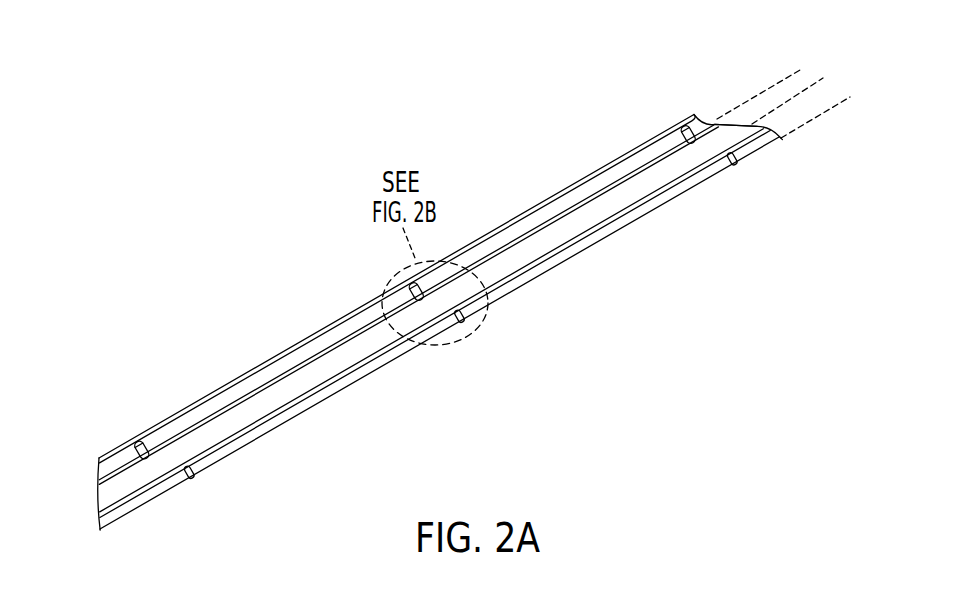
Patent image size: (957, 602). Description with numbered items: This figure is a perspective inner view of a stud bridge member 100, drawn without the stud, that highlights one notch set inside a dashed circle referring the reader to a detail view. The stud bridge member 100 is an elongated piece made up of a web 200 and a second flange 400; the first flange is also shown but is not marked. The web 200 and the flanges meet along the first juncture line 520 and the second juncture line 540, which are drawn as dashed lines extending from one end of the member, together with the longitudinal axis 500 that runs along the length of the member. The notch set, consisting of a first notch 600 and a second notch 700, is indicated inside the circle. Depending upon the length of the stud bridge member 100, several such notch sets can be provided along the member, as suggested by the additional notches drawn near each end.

The stud bridge member 100 is at (557, 124).
The web 200 is at (109, 494).
The second flange 400 is at (755, 146).
The longitudinal axis 500 is at (785, 101).
The first juncture line 520 is at (777, 82).
The second juncture line 540 is at (837, 105).
The first notch 600 is at (395, 280).
The second notch 700 is at (459, 331).